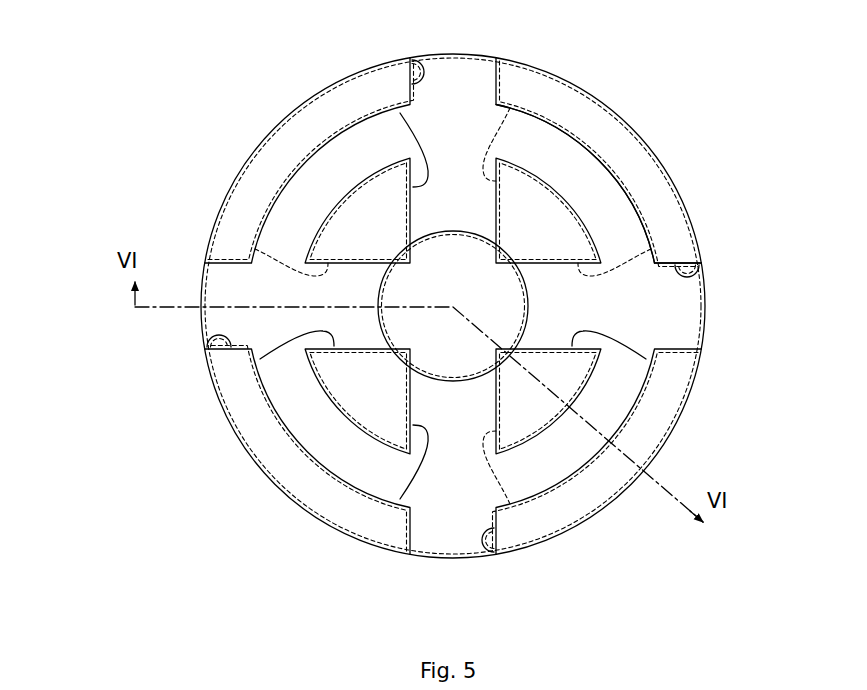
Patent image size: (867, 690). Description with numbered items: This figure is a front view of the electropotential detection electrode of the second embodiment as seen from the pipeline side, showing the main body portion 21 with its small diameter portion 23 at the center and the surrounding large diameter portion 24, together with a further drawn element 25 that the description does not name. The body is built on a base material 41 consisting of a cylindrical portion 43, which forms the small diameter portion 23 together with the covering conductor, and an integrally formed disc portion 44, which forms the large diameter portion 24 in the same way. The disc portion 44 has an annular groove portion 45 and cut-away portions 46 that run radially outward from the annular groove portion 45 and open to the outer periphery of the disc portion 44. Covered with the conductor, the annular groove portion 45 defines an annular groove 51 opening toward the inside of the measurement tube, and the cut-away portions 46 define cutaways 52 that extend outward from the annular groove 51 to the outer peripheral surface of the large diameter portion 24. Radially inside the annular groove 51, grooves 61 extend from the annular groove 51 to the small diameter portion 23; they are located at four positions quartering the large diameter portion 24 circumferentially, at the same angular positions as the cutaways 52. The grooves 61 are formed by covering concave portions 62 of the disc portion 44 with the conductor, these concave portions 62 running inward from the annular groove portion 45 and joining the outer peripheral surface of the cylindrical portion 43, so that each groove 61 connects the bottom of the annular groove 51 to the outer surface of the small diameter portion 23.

The main body portion 21 is at (226, 181).
The small diameter portion 23 is at (337, 252).
The large diameter portion 24 is at (373, 258).
The center hole 25 is at (433, 253).
The base material 41 is at (678, 180).
The cylindrical portion 43 is at (556, 192).
The disc portion 44 is at (618, 188).
The annular groove portion 45 is at (618, 152).
The cut-away portions 46 is at (468, 53).
The annular groove 51 is at (360, 143).
The cutaways 52 is at (426, 58).
The grooves 61 is at (400, 113).
The concave portions 62 is at (510, 108).